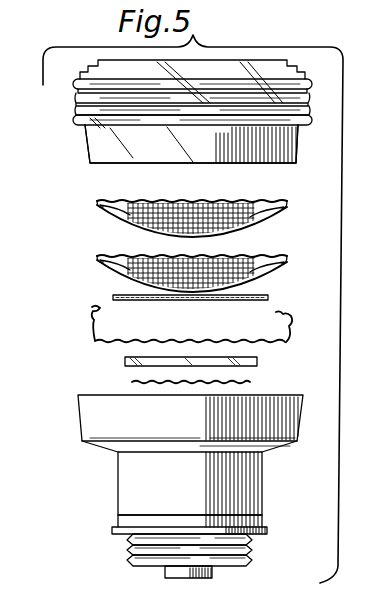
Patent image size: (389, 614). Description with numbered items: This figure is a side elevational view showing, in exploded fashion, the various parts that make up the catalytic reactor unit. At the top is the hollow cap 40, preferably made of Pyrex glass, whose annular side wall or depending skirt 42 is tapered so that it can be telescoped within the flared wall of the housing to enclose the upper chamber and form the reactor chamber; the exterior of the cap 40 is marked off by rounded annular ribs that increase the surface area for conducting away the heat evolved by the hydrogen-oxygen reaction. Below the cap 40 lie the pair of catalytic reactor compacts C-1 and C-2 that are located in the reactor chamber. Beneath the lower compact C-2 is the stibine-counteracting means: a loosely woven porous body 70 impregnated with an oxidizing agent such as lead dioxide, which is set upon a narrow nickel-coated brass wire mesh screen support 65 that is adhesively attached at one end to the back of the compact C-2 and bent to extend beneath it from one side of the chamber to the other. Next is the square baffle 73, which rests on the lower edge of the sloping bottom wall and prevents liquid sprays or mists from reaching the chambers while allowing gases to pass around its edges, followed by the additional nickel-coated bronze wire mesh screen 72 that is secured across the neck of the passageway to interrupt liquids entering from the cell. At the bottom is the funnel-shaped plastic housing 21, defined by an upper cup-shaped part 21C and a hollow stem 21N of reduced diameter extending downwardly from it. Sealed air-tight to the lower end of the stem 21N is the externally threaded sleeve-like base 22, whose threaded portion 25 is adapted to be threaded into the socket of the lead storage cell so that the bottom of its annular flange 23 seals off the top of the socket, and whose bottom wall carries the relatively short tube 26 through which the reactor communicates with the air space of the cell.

The hollow cap 40 is at (267, 61).
The depending skirt 42 is at (85, 141).
The catalytic reactor compact C-1 is at (256, 200).
The catalytic reactor compact C-2 is at (252, 256).
The porous body 70 is at (269, 299).
The wire mesh screen support 65 is at (92, 325).
The square baffle 73 is at (125, 362).
The wire mesh screen 72 is at (250, 383).
The funnel-shaped housing 21 is at (100, 450).
The upper cup-shaped part 21C is at (78, 410).
The hollow stem 21N is at (265, 481).
The sleeve-like base 22 is at (267, 524).
The annular flange 23 is at (112, 528).
The threaded portion 25 is at (252, 556).
The short tube 26 is at (165, 572).